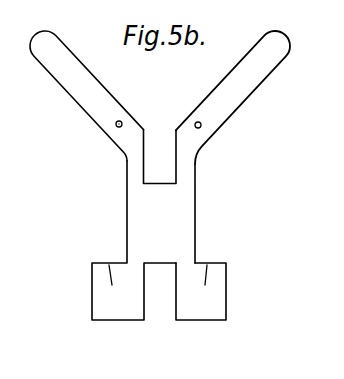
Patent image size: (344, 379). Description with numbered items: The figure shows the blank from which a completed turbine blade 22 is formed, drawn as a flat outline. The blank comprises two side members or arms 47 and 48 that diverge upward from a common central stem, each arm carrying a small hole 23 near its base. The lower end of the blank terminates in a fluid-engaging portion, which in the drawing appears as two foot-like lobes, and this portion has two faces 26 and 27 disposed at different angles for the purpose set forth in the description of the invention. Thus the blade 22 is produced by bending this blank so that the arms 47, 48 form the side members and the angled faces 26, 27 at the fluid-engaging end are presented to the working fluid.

The turbine blade 22 is at (261, 216).
The aperture 23 is at (202, 126).
The face 26 is at (225, 266).
The face 27 is at (197, 268).
The side member or arm 47 is at (126, 156).
The side member or arm 48 is at (187, 158).